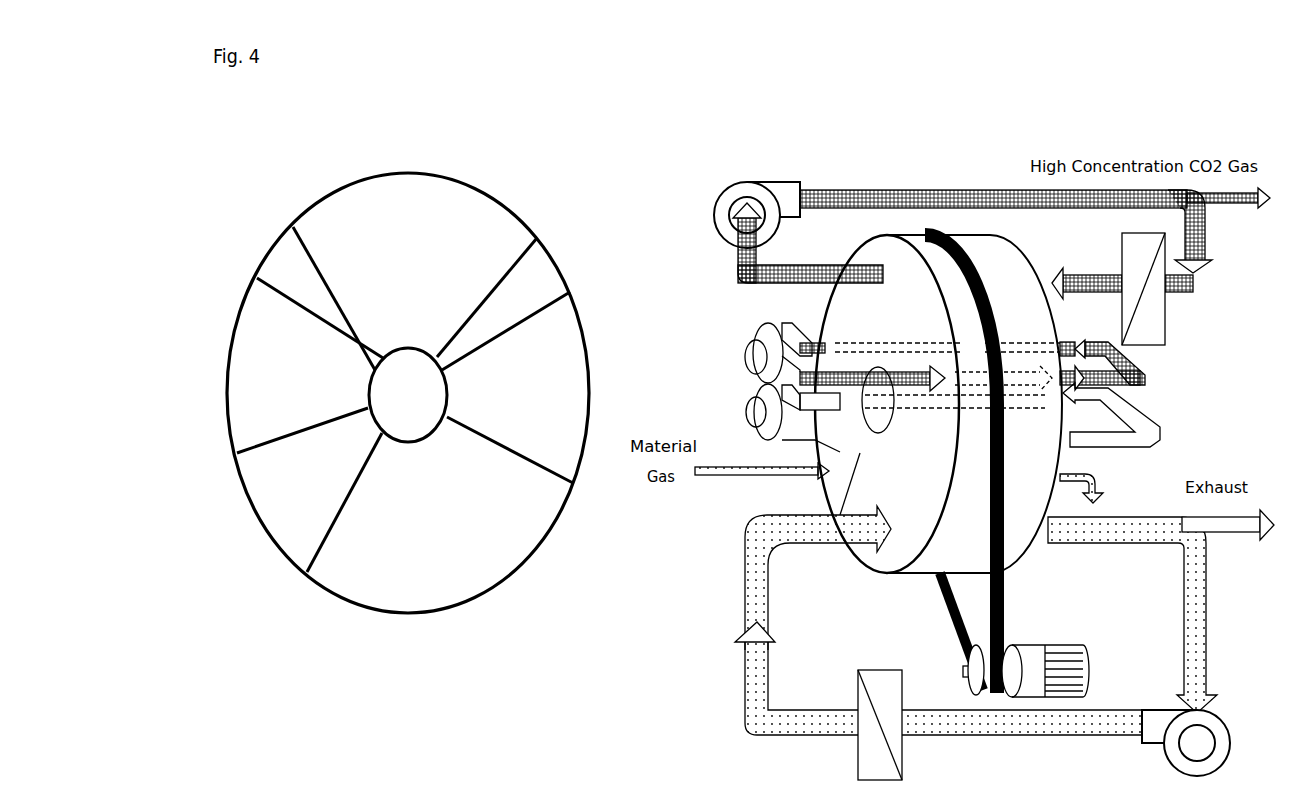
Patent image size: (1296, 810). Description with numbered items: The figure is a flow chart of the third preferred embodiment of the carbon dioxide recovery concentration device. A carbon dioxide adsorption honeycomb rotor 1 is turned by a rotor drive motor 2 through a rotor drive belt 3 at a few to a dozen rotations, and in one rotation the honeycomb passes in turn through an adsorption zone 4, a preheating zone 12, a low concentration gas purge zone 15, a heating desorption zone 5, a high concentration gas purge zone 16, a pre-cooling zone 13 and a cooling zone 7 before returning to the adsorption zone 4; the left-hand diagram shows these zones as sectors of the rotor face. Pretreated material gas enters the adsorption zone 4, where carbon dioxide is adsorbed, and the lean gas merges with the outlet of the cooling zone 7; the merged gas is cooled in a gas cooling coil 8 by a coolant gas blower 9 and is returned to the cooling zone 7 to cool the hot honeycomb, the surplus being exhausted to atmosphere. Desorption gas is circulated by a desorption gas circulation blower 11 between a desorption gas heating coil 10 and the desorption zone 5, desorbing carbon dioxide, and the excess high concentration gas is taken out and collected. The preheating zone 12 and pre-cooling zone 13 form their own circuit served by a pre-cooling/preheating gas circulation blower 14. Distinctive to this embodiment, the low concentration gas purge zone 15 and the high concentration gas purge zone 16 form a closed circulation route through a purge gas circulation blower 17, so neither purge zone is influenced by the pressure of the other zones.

The carbon dioxide adsorption honeycomb rotor 1 is at (1015, 548).
The rotor drive motor 2 is at (1088, 680).
The rotor drive belt 3 is at (1005, 583).
The adsorption zone 4 is at (825, 485).
The desorption zone 5 is at (878, 250).
The cooling zone 7 is at (925, 632).
The gas cooling coil 8 is at (878, 668).
The coolant gas blower 9 is at (1224, 717).
The desorption gas heating coil 10 is at (1122, 251).
The desorption gas circulation blower 11 is at (724, 243).
The preheating zone 12 is at (257, 370).
The pre-cooling zone 13 is at (1022, 325).
The pre-cooling/preheating gas circulation blower 14 is at (748, 408).
The low concentration gas purge zone 15 is at (818, 340).
The high concentration gas purge zone 16 is at (990, 360).
The purge gas circulation blower 17 is at (752, 352).